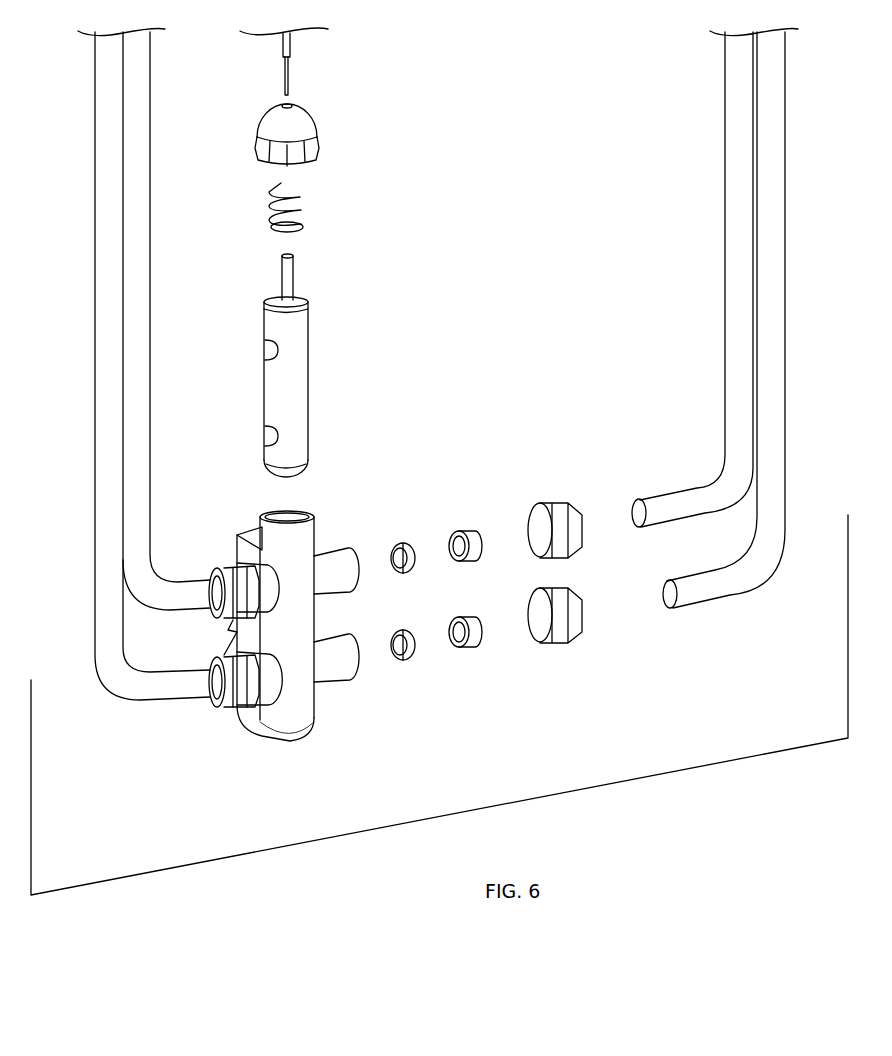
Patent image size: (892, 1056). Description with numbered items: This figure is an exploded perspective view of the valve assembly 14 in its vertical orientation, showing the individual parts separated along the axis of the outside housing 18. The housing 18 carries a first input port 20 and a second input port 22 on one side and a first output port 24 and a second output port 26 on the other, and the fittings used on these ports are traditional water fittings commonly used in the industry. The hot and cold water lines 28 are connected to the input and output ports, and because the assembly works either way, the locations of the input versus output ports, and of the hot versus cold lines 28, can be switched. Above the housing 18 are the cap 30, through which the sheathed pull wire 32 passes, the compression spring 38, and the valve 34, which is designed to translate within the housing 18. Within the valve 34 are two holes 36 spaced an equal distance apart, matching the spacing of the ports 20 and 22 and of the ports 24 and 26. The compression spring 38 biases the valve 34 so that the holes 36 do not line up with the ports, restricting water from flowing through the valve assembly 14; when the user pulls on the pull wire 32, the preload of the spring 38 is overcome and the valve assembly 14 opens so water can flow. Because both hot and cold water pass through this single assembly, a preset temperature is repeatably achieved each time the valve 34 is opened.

The valve assembly 14 is at (498, 134).
The outside housing 18 is at (302, 725).
The first input port 20 is at (242, 580).
The second input port 22 is at (242, 690).
The first output port 24 is at (346, 665).
The second output port 26 is at (342, 552).
The hot and cold water lines 28 is at (140, 218).
The cap 30 is at (318, 137).
The sheathed pull wire 32 is at (292, 49).
The valve 34 is at (286, 365).
The holes 36 is at (265, 352).
The compression spring 38 is at (305, 221).